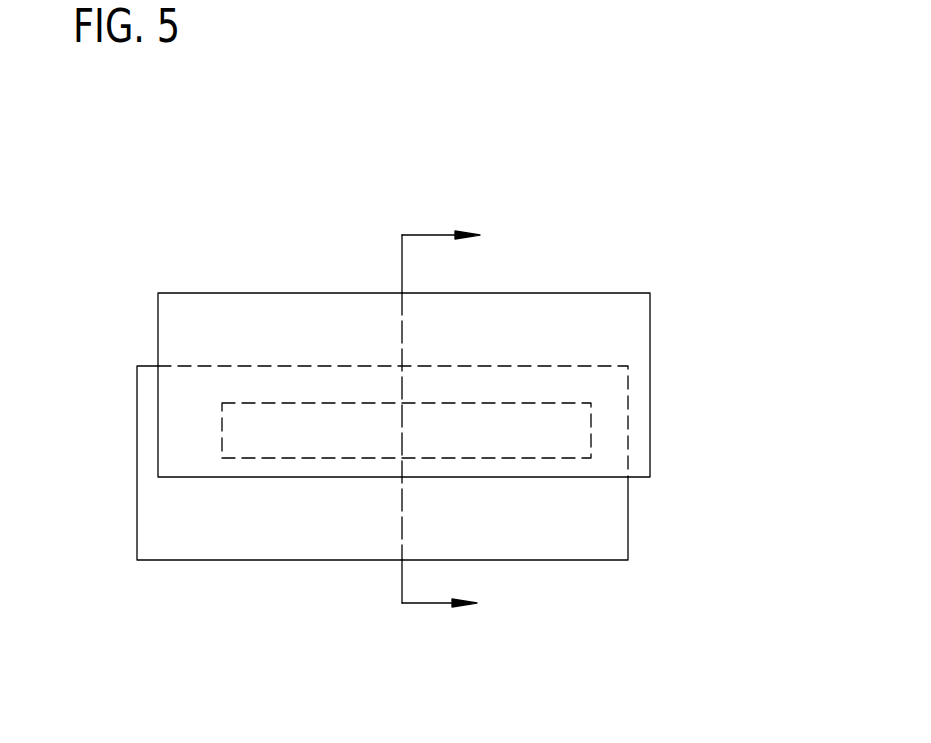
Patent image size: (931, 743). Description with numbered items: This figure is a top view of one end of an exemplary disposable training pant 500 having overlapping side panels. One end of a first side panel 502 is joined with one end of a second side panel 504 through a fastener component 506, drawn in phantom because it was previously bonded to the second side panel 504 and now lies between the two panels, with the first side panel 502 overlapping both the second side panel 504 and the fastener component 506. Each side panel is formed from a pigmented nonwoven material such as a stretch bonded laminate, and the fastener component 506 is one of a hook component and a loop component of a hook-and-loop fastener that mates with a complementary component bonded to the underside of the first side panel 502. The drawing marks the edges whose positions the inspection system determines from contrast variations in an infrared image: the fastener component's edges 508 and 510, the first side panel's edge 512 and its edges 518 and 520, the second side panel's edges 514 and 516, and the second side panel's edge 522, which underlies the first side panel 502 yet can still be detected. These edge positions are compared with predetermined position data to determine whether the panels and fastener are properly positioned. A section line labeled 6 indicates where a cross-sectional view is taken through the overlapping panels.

The training pant 500 is at (107, 303).
The first side panel 502 is at (587, 322).
The second side panel 504 is at (558, 533).
The fastener component 506 is at (542, 443).
The fastener component's edge 508 is at (560, 398).
The fastener component's edge 510 is at (332, 458).
The first side panel's edge 512 is at (502, 477).
The second side panel's edge 514 is at (137, 542).
The second side panel's edge 516 is at (628, 512).
The first side panel's edge 518 is at (157, 425).
The first side panel's edge 520 is at (650, 363).
The second side panel's edge 522 is at (277, 362).
The section line 6- 6 is at (458, 421).